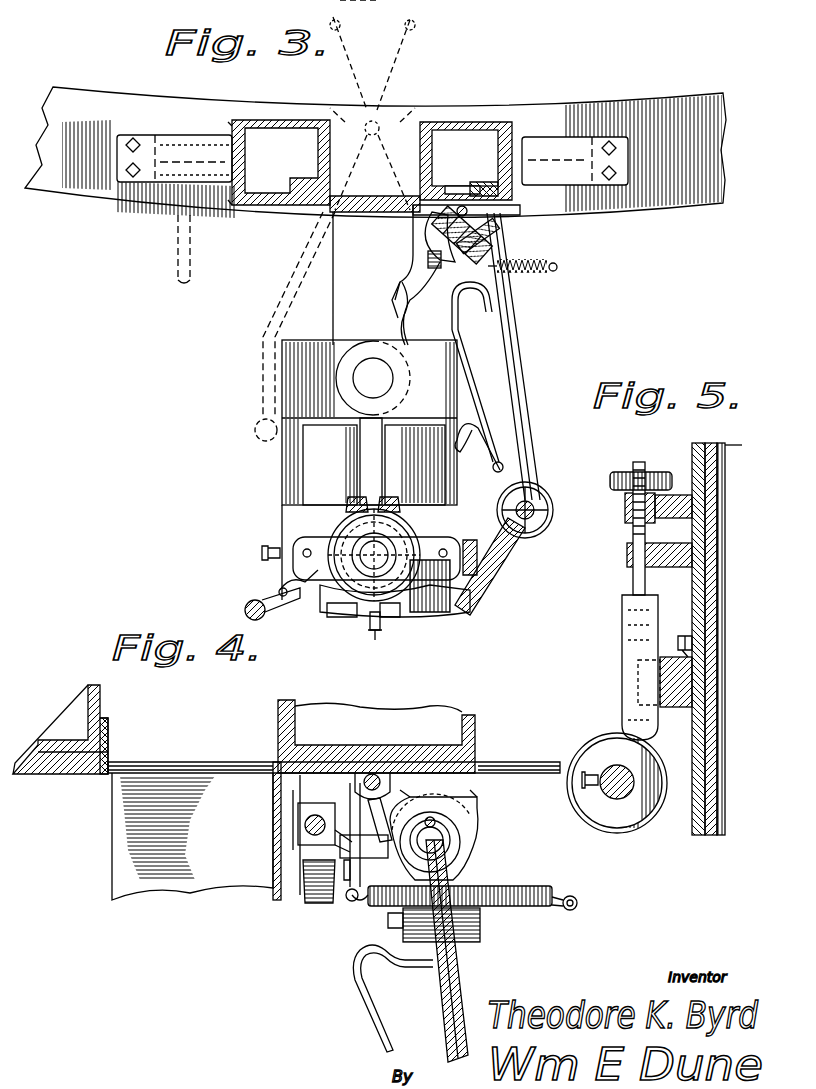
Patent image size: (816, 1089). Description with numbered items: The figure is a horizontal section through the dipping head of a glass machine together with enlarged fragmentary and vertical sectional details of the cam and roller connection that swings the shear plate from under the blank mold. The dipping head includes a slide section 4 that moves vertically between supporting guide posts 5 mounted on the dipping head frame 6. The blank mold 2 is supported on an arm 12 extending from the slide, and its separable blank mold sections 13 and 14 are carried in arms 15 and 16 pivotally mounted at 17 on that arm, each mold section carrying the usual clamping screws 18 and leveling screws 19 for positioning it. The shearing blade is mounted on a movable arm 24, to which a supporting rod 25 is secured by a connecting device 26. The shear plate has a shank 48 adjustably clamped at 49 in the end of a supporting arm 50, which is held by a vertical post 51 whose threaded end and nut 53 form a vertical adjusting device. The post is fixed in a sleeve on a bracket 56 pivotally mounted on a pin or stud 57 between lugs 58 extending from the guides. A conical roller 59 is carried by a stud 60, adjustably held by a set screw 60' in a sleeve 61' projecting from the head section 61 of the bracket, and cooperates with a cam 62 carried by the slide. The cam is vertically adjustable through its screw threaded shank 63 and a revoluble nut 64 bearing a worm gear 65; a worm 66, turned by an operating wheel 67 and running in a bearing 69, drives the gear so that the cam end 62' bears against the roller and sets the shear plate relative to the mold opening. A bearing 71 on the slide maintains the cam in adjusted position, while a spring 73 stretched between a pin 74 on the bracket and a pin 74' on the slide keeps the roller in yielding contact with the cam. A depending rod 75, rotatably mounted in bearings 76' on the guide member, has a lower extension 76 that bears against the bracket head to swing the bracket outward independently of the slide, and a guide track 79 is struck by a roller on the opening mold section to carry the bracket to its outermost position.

In FIG. 3, the blank mold 2 is at (323, 533).
In FIG. 5, the slide section 4 is at (712, 843).
In FIG. 4, the slide section 4 is at (108, 738).
In FIG. 3, the supporting guide posts 5 is at (333, 127).
In FIG. 5, the supporting guide posts 5 is at (720, 832).
In FIG. 4, the supporting guide posts 5 is at (100, 718).
In FIG. 3, the dipping head frame 6 is at (208, 135).
In FIG. 3, the arm 12 is at (340, 293).
In FIG. 5, the arm 12 is at (647, 655).
In FIG. 4, the arm 12 is at (112, 855).
In FIG. 3, the blank mold section 13 is at (330, 528).
In FIG. 3, the blank mold section 14 is at (480, 590).
In FIG. 3, the arm 15 is at (283, 470).
In FIG. 3, the arm 16 is at (485, 455).
In FIG. 3, the pivot 17 is at (365, 392).
In FIG. 3, the clamping screws 18 is at (370, 478).
In FIG. 3, the leveling screws 19 is at (360, 505).
In FIG. 3, the movable arm 24 is at (305, 592).
In FIG. 3, the supporting rod 25 is at (248, 607).
In FIG. 3, the connecting device 26 is at (262, 620).
In FIG. 3, the shank 48 is at (375, 620).
In FIG. 3, the clamp 49 is at (383, 615).
In FIG. 3, the supporting arm 50 is at (455, 600).
In FIG. 3, the vertical post 51 is at (535, 530).
In FIG. 3, the nut 53 is at (470, 505).
In FIG. 3, the bracket 56 is at (510, 342).
In FIG. 4, the bracket 56 is at (447, 1010).
In FIG. 3, the pin or stud 57 is at (528, 240).
In FIG. 4, the pin or stud 57 is at (450, 838).
In FIG. 3, the lugs 58 is at (520, 213).
In FIG. 4, the lugs 58 is at (440, 793).
In FIG. 3, the conical roller 59 is at (428, 260).
In FIG. 5, the conical roller 59 is at (582, 745).
In FIG. 4, the conical roller 59 is at (317, 888).
In FIG. 5, the stud 60 is at (595, 809).
In FIG. 4, the stud 60 is at (267, 872).
In FIG. 4, the set screw 60' is at (309, 943).
In FIG. 3, the head section 61 is at (514, 266).
In FIG. 4, the head section 61 is at (452, 856).
In FIG. 4, the sleeve 61' is at (295, 887).
In FIG. 5, the cam 62 is at (611, 682).
In FIG. 5, the cam end 62' is at (627, 679).
In FIG. 5, the screw threaded shank 63 is at (633, 530).
In FIG. 5, the revoluble nut 64 is at (625, 500).
In FIG. 3, the worm gear 65 is at (410, 235).
In FIG. 5, the worm gear 65 is at (628, 470).
In FIG. 3, the worm 66 is at (455, 186).
In FIG. 3, the operating wheel 67 is at (400, 285).
In FIG. 3, the bearing 69 is at (478, 196).
In FIG. 5, the bearing 71 is at (660, 552).
In FIG. 3, the spring 73 is at (560, 280).
In FIG. 4, the spring 73 is at (560, 898).
In FIG. 3, the pin 74 is at (569, 279).
In FIG. 4, the pin 74 is at (490, 907).
In FIG. 4, the pin 74' is at (334, 788).
In FIG. 3, the depending rod 75 is at (500, 130).
In FIG. 4, the depending rod 75 is at (385, 777).
In FIG. 3, the lower extension 76 is at (403, 303).
In FIG. 4, the lower extension 76 is at (471, 931).
In FIG. 4, the bearings 76' is at (407, 755).
In FIG. 3, the guide track 79 is at (485, 380).
In FIG. 4, the guide track 79 is at (378, 1025).